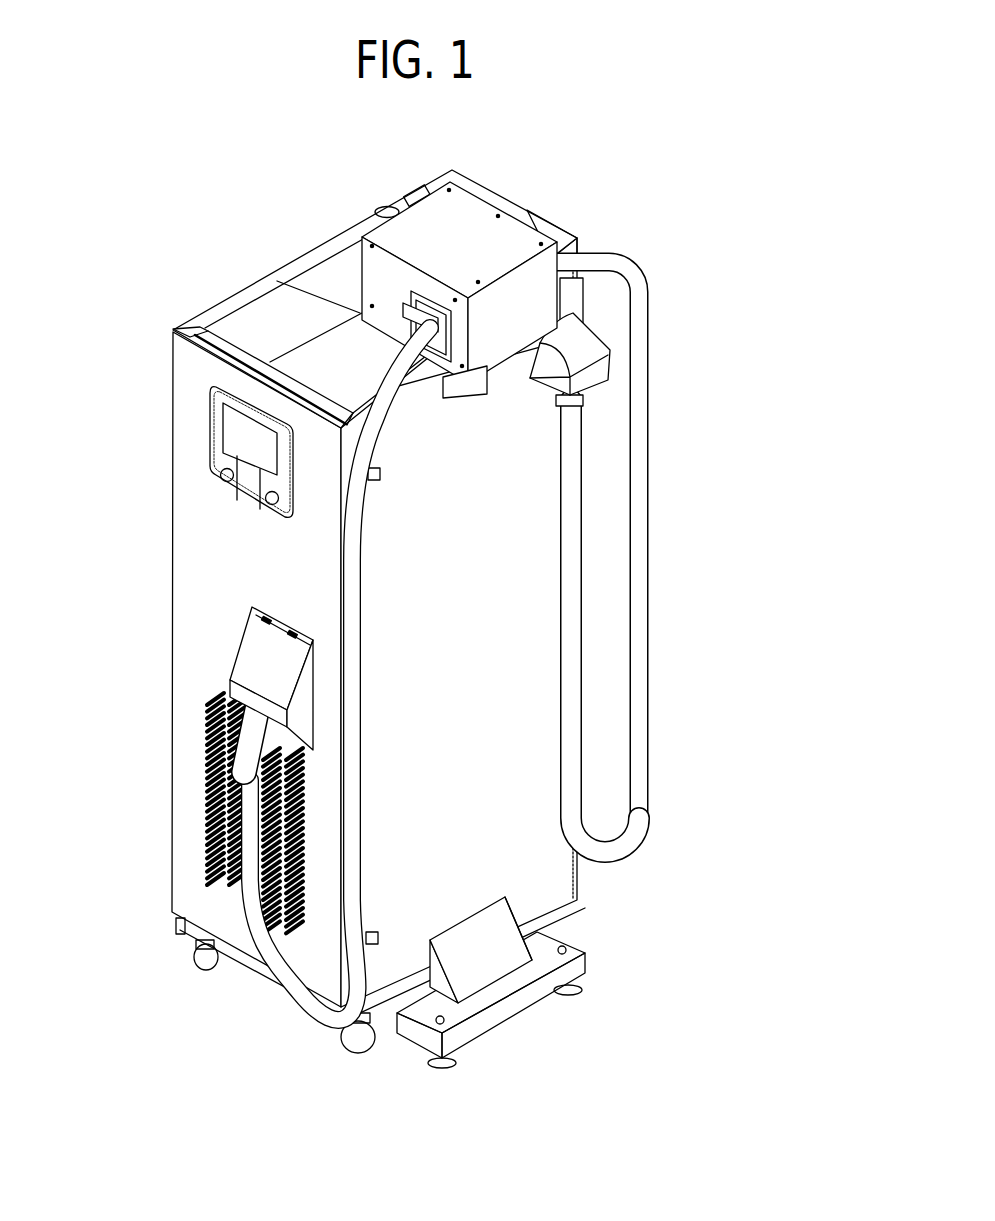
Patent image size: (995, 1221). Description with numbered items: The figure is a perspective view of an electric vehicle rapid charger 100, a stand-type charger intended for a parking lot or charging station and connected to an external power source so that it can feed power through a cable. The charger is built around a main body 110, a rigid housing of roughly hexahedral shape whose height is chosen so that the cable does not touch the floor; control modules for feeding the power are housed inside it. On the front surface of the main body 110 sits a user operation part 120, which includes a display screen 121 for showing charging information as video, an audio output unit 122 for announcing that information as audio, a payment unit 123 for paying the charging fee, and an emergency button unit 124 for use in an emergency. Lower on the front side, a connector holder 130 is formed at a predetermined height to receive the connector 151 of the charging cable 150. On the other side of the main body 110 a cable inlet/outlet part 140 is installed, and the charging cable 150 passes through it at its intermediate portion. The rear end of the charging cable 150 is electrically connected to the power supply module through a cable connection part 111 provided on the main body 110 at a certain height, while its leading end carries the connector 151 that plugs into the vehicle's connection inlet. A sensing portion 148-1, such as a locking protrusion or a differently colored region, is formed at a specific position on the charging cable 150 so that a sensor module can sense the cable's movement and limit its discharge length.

The electric vehicle rapid charger 100 is at (203, 137).
The main body 110 is at (535, 832).
The cable connection part 111 is at (607, 340).
The user operation part 120 is at (184, 491).
The display screen 121 is at (235, 438).
The audio output unit 122 is at (222, 477).
The payment unit 123 is at (250, 487).
The emergency button unit 124 is at (272, 498).
The connector holder 130 is at (228, 676).
The cable inlet/outlet part 140 is at (512, 200).
The sensing portion 148-1 is at (630, 631).
The charging cable 150 is at (641, 502).
The connector 151 is at (252, 763).